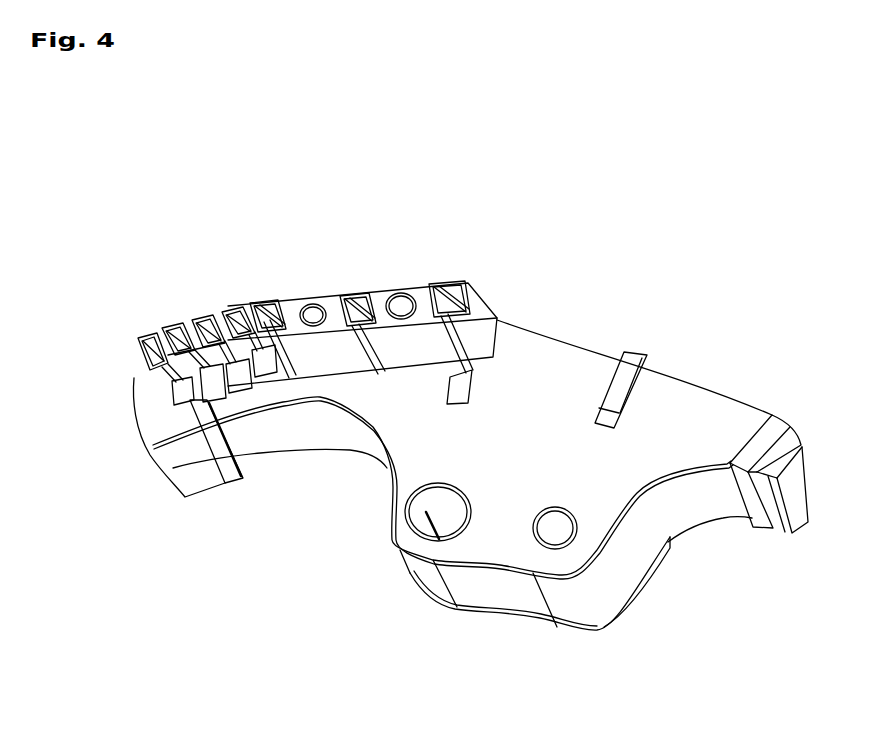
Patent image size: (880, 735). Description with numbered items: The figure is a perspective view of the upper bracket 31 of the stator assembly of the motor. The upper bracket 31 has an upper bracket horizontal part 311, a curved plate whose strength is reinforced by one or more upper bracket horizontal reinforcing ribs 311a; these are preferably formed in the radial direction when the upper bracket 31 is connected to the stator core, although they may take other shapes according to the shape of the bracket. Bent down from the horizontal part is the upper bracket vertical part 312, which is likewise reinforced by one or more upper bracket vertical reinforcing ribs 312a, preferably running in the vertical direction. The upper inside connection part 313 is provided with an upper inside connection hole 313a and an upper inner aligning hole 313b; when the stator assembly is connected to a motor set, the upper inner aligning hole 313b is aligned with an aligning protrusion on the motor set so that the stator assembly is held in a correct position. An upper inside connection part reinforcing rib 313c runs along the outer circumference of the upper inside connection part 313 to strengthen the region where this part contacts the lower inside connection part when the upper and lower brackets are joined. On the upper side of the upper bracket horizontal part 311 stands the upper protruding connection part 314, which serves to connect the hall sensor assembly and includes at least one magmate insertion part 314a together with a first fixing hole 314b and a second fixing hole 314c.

The upper bracket 31 is at (595, 169).
The upper bracket horizontal part 311 is at (703, 393).
The upper bracket horizontal reinforcing rib 311a is at (630, 363).
The upper bracket vertical part 312 is at (697, 512).
The upper bracket vertical reinforcing rib 312a is at (212, 455).
The upper inside connection part 313 is at (490, 588).
The upper inside connection hole 313a is at (430, 522).
The upper inner aligning hole 313b is at (560, 543).
The upper inside connection part reinforcing rib 313c is at (620, 610).
The upper protruding connection part 314 is at (327, 357).
The magmate insertion part 314a is at (257, 303).
The first fixing hole 314b is at (315, 316).
The second fixing hole 314c is at (405, 305).